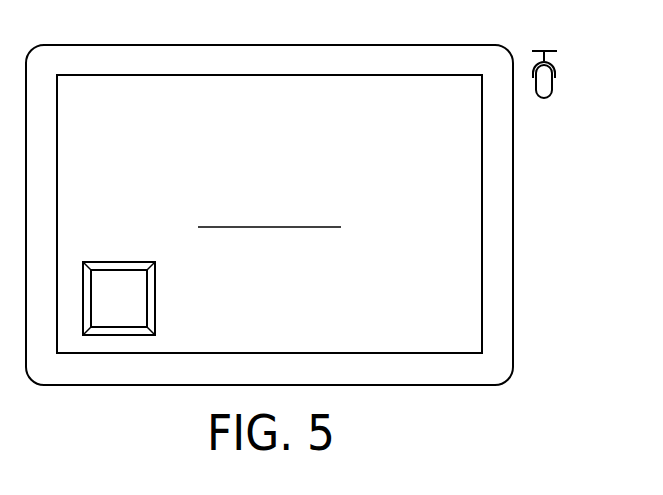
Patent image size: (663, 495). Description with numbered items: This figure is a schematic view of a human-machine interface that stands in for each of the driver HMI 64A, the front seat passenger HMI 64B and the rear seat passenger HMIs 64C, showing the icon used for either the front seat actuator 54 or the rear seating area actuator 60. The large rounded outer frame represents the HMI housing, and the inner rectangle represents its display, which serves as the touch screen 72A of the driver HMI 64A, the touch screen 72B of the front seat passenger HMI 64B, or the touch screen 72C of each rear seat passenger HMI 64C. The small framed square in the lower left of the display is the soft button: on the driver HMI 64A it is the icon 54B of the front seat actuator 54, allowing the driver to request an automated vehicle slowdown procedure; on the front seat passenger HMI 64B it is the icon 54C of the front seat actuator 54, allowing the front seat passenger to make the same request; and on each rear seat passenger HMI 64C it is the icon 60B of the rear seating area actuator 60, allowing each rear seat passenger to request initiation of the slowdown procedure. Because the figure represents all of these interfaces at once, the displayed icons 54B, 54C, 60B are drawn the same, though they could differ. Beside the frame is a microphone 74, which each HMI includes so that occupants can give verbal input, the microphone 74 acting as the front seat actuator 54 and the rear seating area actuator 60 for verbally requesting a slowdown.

The driver HMI 64A is at (289, 233).
The front seat passenger HMI 64B is at (289, 233).
The rear seat passenger HMI 64C is at (384, 385).
The touch screen 72A is at (269, 214).
The touch screen 72B is at (269, 214).
The touch screen 72C is at (269, 214).
The front seat actuator 54 is at (240, 298).
The icon 54B is at (240, 298).
The icon 54C is at (240, 298).
The rear seating area actuator 60 is at (240, 298).
The icon 60B is at (149, 298).
The microphone 74 is at (546, 94).